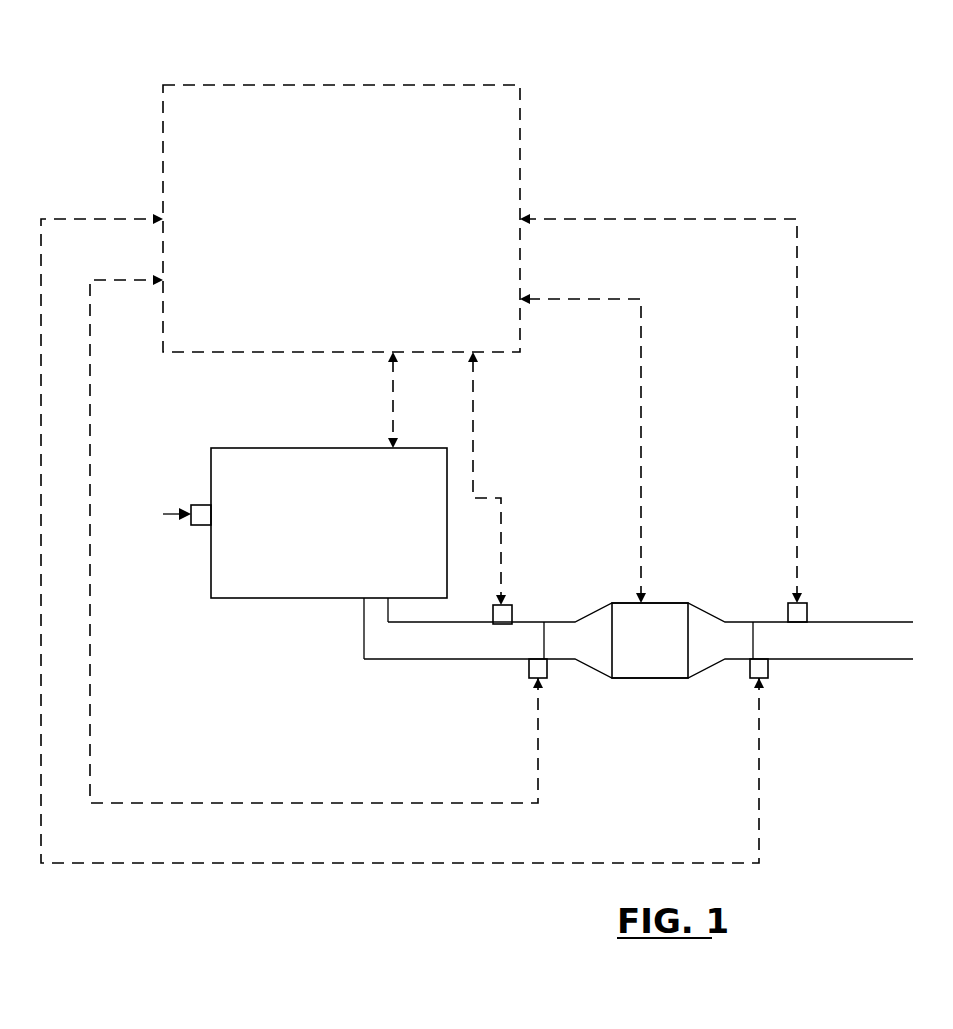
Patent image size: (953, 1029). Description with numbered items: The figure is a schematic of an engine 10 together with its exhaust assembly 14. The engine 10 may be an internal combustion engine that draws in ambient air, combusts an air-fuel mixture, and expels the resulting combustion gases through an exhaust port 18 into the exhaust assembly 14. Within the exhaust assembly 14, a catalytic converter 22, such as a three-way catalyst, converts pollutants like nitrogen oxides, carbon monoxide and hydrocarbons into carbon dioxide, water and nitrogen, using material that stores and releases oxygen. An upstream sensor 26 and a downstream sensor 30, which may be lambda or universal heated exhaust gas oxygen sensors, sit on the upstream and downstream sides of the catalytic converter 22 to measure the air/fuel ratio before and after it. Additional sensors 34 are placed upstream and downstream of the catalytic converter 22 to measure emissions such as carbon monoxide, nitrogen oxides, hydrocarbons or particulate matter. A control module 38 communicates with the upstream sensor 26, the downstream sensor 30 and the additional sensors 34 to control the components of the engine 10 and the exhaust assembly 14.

The control module 38 is at (338, 82).
The engine 10 is at (328, 448).
The exhaust assembly 14 is at (838, 566).
The exhaust port 18 is at (378, 610).
The catalytic converter 22 is at (670, 680).
The upstream sensor 26 is at (547, 668).
The downstream sensor 30 is at (768, 668).
The additional sensors 34 is at (512, 612).